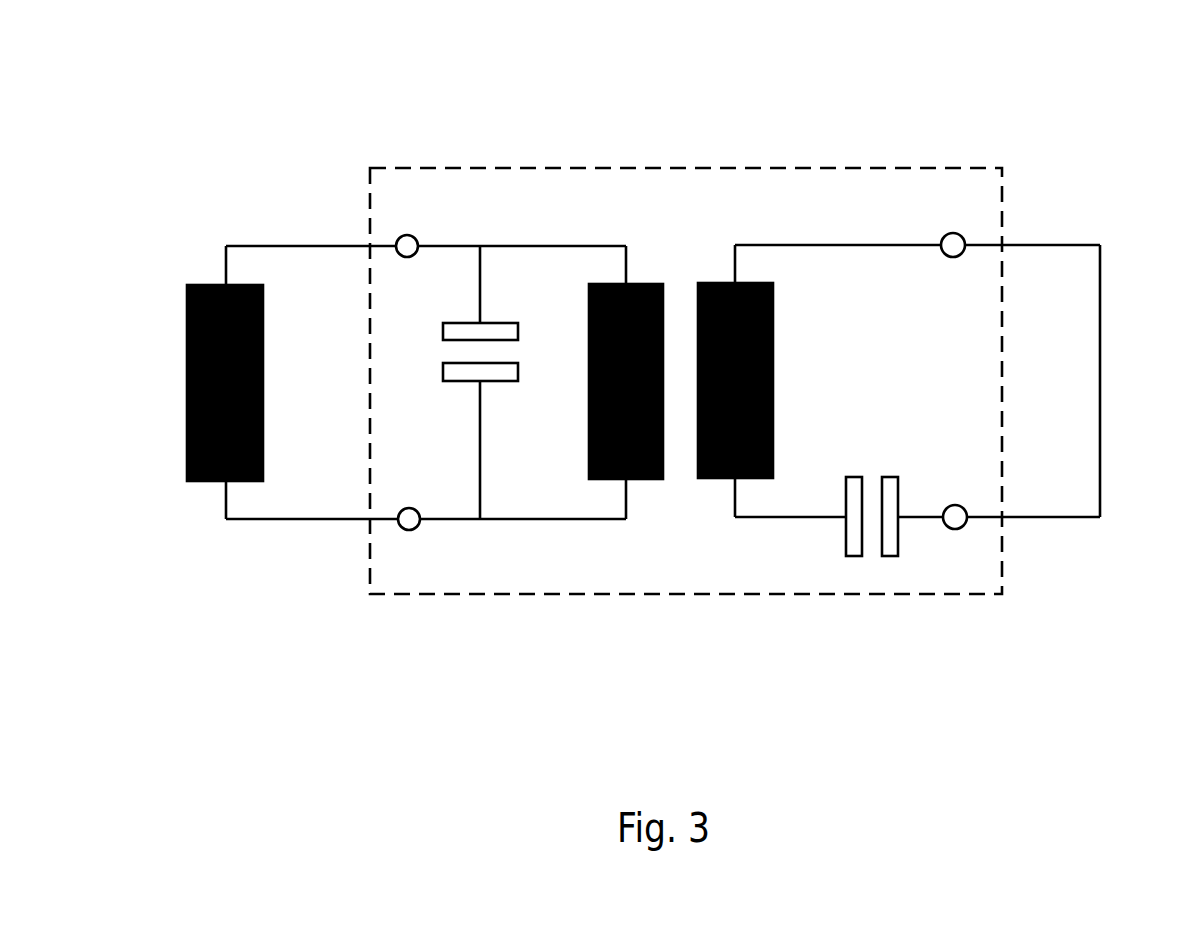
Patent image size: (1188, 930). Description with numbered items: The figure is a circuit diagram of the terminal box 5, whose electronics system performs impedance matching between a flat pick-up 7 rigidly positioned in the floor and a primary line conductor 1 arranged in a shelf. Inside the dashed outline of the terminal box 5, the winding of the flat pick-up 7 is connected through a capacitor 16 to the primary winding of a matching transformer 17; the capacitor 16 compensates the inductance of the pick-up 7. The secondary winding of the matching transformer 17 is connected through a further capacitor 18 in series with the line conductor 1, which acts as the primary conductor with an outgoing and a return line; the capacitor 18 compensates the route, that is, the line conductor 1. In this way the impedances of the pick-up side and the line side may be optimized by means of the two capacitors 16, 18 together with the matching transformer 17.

The line conductor 1 is at (1106, 353).
The terminal box 5 is at (862, 167).
The flat pick-up 7 is at (197, 482).
The capacitor 16 is at (466, 371).
The matching transformer 17 is at (713, 478).
The capacitor 18 is at (852, 527).